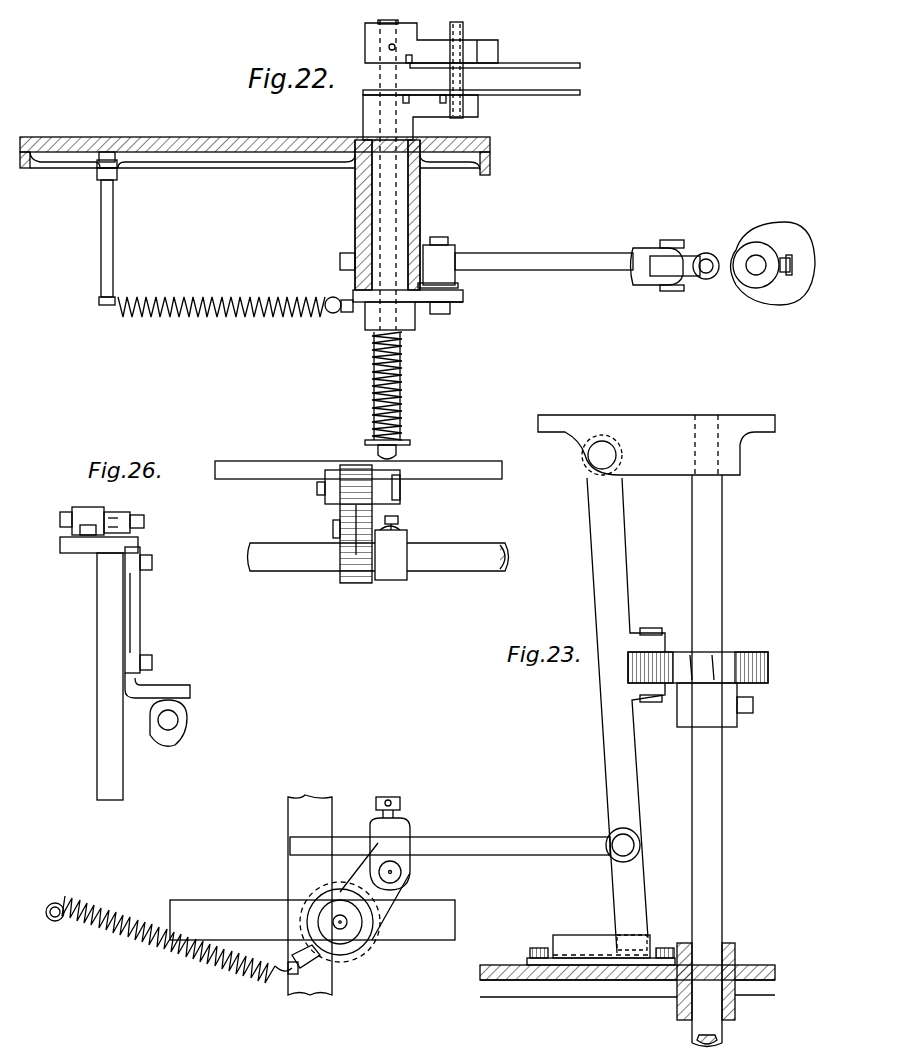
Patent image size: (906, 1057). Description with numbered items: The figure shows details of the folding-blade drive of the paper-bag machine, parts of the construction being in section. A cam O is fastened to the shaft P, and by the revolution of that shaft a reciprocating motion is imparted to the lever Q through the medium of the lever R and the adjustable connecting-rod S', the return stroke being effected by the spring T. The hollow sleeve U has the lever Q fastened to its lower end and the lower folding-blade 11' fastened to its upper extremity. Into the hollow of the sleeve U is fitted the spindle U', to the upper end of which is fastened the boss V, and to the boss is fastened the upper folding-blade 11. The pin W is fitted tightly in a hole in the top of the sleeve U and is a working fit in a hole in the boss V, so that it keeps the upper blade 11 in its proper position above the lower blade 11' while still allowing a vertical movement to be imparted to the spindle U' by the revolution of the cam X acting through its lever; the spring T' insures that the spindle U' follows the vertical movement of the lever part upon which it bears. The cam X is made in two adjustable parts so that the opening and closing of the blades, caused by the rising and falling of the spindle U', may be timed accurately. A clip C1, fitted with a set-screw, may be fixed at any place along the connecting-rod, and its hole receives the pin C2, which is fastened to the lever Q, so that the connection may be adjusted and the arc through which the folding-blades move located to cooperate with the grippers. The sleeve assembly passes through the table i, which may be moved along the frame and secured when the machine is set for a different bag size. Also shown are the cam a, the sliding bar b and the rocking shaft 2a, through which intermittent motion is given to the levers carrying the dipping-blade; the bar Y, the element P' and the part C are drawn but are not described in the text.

In FIG. 22, the table i is at (240, 143).
In FIG. 22, the boss V is at (418, 46).
In FIG. 22, the hollow sleeve U is at (420, 117).
In FIG. 23, the hollow sleeve U is at (344, 932).
In FIG. 22, the spindle U' is at (400, 165).
In FIG. 23, the spindle U' is at (302, 905).
In FIG. 22, the pin W is at (465, 30).
In FIG. 22, the upper folding-blade 11 is at (495, 54).
In FIG. 22, the lower folding-blade 11' is at (471, 103).
In FIG. 22, the adjustable connecting-rod S' is at (486, 262).
In FIG. 23, the adjustable connecting-rod S' is at (465, 838).
In FIG. 22, the lever R is at (675, 265).
In FIG. 23, the lever R is at (626, 715).
In FIG. 22, the shaft P is at (773, 263).
In FIG. 23, the shaft P is at (707, 761).
In FIG. 22, the spring T is at (235, 293).
In FIG. 23, the spring T is at (183, 939).
In FIG. 22, the lever Q is at (415, 322).
In FIG. 23, the lever Q is at (355, 902).
In FIG. 22, the spring T' is at (375, 395).
In FIG. 22, the bar Y is at (436, 466).
In FIG. 23, the bar Y is at (312, 920).
In FIG. 22, the cam X is at (378, 548).
In FIG. 26, the post P' is at (103, 668).
In FIG. 26, the rocking shaft 2a is at (68, 512).
In FIG. 26, the clamp C is at (120, 516).
In FIG. 26, the sliding bar b is at (142, 615).
In FIG. 26, the cam a is at (170, 722).
In FIG. 23, the cam O is at (760, 685).
In FIG. 23, the clip C1 is at (390, 843).
In FIG. 23, the pin C2 is at (402, 871).